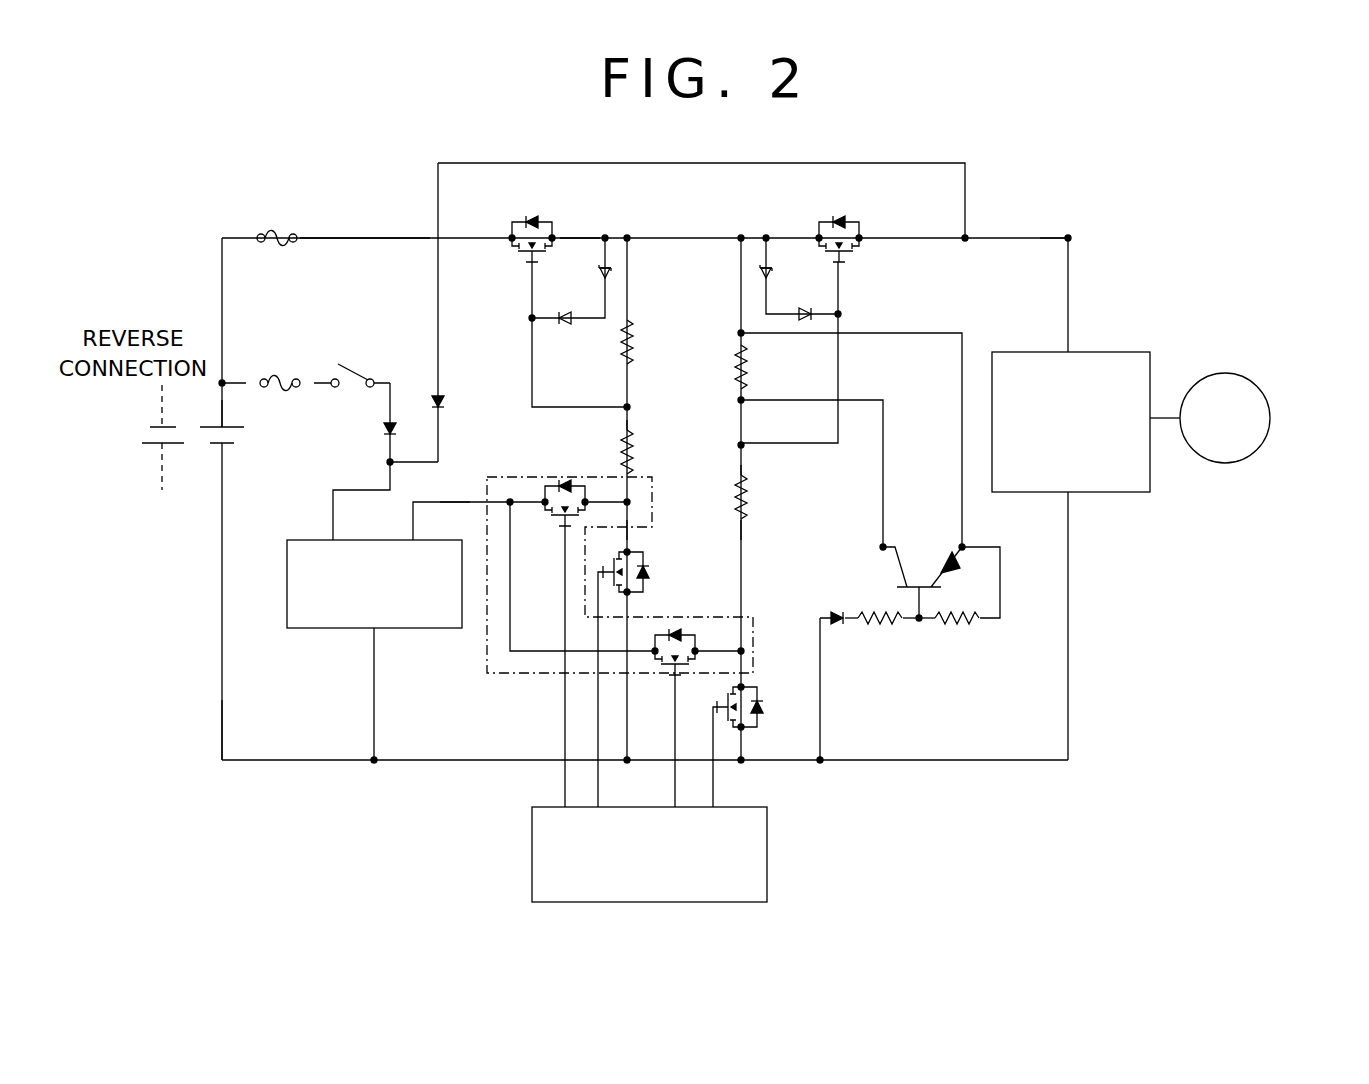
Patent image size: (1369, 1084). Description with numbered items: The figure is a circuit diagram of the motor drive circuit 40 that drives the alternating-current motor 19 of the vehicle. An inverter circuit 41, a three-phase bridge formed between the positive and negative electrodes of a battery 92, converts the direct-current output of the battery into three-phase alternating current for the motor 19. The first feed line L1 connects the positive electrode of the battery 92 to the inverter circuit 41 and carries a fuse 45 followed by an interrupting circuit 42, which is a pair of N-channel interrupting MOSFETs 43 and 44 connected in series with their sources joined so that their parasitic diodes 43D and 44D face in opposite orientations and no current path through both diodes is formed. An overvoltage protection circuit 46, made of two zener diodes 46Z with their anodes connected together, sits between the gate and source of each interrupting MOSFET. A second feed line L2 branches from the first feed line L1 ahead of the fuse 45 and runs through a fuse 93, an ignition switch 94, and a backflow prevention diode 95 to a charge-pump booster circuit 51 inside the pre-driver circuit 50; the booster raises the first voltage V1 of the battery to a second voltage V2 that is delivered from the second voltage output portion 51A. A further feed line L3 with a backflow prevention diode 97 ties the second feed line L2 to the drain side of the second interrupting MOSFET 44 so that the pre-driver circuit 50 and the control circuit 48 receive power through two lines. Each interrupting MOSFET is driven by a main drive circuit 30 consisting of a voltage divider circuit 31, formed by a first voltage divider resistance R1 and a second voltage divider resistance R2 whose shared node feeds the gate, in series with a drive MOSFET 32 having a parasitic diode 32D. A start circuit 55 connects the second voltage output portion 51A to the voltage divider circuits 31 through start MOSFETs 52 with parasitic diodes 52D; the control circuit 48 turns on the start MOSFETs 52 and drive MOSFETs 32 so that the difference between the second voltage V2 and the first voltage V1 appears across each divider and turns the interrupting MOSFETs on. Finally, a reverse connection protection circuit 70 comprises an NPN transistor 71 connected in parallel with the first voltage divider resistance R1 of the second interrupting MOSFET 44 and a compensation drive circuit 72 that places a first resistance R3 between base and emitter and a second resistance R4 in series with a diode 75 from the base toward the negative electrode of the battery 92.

The motor 19 is at (1258, 490).
The main drive circuit 30 is at (686, 440).
The voltage divider circuit 31 is at (640, 414).
The drive MOSFET 32 is at (646, 548).
The parasitic diode 32D is at (646, 572).
The motor drive circuit 40 is at (1048, 205).
The inverter circuit 41 is at (1122, 352).
The interrupting circuit 42 is at (638, 210).
The first interrupting MOSFET 43 is at (566, 228).
The parasitic diode 43D is at (533, 221).
The second interrupting MOSFET 44 is at (811, 225).
The parasitic diode 44D is at (837, 221).
The fuse 45 is at (268, 250).
The overvoltage protection circuit 46 is at (565, 288).
The zener diode 46Z is at (566, 318).
The control circuit 48 is at (767, 845).
The pre-driver circuit 50 is at (338, 668).
The booster circuit 51 is at (297, 540).
The second voltage output portion 51A is at (413, 528).
The start MOSFET 52 is at (562, 523).
The parasitic diode 52D is at (564, 485).
The start circuit 55 is at (505, 675).
The reverse connection protection circuit 70 is at (1178, 560).
The transistor 71 is at (957, 587).
The compensation drive circuit 72 is at (1125, 612).
The diode 75 is at (838, 630).
The battery 92 is at (200, 443).
The fuse 93 is at (290, 378).
The ignition switch 94 is at (350, 365).
The backflow prevention diode 95 is at (383, 423).
The backflow prevention diode 97 is at (445, 402).
The first voltage divider resistance R1 is at (640, 340).
The second voltage divider resistance R2 is at (620, 440).
The first resistance R3 is at (955, 637).
The second resistance R4 is at (877, 633).
The first feed line L1 is at (362, 238).
The second feed line L2 is at (393, 415).
The feed line L3 is at (760, 163).
The first voltage V1 is at (203, 412).
The second voltage V2 is at (459, 491).